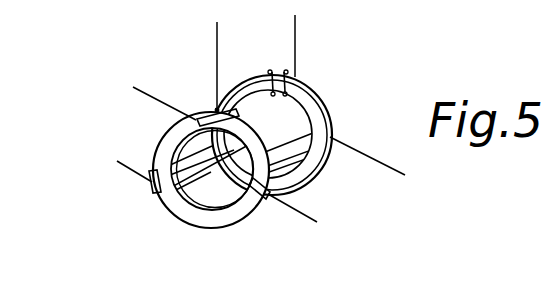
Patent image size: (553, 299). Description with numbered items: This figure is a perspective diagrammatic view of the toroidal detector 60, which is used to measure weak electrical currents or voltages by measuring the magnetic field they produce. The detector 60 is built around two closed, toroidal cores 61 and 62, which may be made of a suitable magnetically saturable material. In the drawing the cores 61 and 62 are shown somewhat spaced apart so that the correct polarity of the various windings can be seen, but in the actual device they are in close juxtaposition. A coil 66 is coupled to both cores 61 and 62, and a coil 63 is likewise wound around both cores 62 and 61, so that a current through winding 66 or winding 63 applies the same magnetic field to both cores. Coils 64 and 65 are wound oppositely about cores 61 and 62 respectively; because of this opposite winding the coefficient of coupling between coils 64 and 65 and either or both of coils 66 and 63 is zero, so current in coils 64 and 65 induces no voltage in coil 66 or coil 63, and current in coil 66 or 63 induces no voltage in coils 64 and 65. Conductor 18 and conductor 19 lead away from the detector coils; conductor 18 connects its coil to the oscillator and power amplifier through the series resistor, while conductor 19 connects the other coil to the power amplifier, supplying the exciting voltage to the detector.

The toroidal detector 60 is at (158, 61).
The toroidal core 61 is at (233, 218).
The toroidal core 62 is at (313, 110).
The coil 63 is at (269, 196).
The coil 64 is at (216, 106).
The coil 65 is at (288, 74).
The coil 66 is at (154, 193).
The conductor 18 is at (297, 36).
The conductor 19 is at (218, 45).